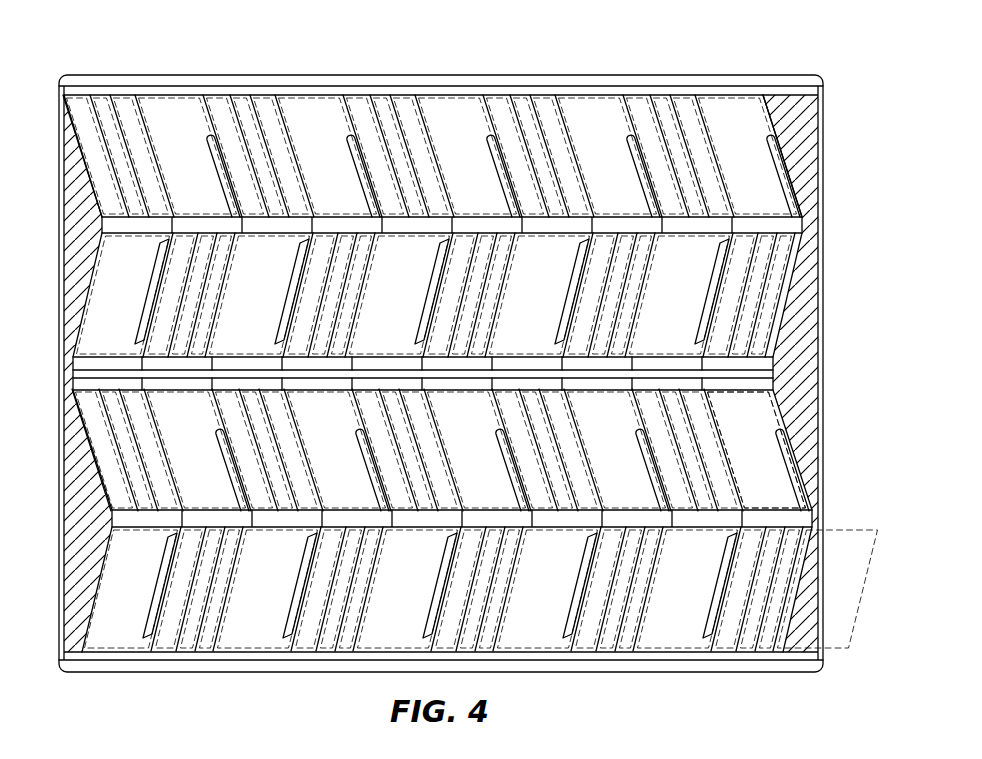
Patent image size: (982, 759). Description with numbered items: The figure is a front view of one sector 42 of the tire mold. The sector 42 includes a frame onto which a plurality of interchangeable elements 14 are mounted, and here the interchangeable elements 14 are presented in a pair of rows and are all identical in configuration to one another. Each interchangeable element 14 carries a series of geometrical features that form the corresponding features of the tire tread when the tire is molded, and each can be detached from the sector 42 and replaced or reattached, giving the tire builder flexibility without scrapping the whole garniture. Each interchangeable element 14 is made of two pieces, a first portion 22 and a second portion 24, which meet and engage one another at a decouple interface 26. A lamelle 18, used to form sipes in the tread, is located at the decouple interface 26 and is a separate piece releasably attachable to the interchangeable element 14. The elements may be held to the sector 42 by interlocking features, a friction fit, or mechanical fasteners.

The sector 42 is at (163, 75).
The interchangeable element 14 is at (750, 102).
The second portion 24 is at (688, 112).
The decouple interface 26 is at (705, 120).
The first portion 22 is at (762, 123).
The lamelle 18 is at (712, 302).